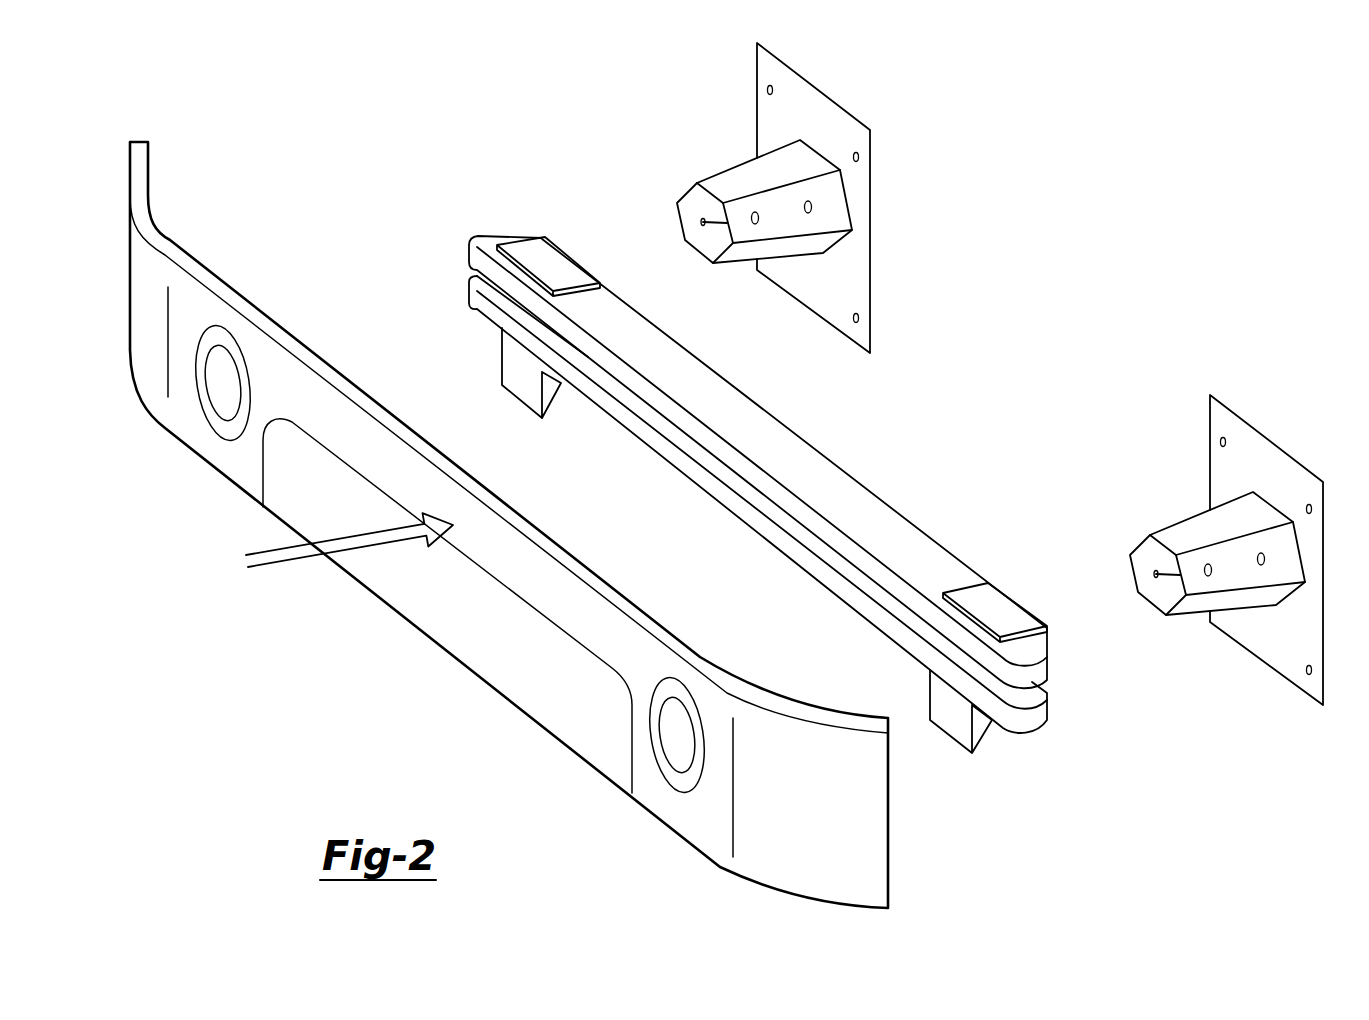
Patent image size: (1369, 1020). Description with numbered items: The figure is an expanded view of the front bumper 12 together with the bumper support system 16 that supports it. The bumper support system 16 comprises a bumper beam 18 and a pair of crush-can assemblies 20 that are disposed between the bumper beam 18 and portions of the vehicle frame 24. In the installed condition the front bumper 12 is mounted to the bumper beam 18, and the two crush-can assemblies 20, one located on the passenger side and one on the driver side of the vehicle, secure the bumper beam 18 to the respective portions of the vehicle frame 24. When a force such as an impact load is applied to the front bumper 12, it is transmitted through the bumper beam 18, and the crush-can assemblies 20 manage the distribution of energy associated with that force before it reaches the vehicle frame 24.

The front bumper 12 is at (206, 158).
The bumper support system 16 is at (539, 101).
The bumper beam 18 is at (545, 192).
The crush-can assemblies 20 is at (728, 165).
The vehicle frame 24 is at (808, 83).